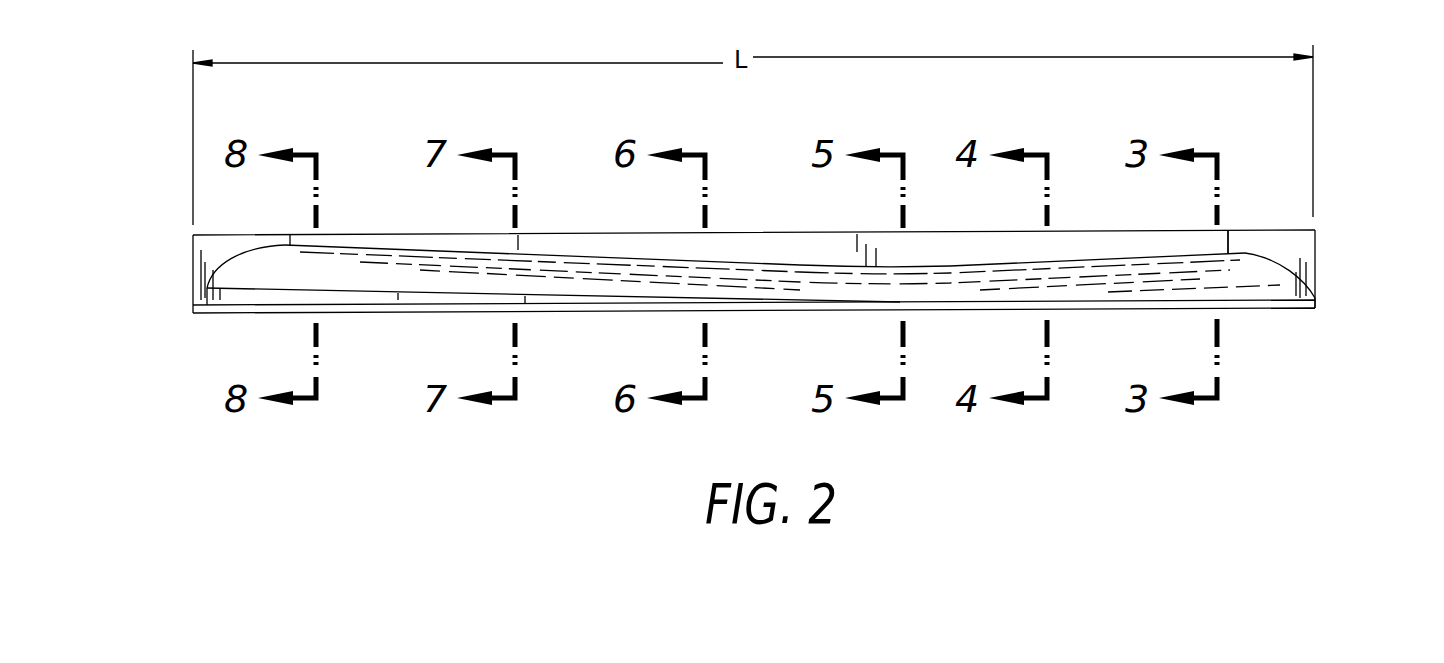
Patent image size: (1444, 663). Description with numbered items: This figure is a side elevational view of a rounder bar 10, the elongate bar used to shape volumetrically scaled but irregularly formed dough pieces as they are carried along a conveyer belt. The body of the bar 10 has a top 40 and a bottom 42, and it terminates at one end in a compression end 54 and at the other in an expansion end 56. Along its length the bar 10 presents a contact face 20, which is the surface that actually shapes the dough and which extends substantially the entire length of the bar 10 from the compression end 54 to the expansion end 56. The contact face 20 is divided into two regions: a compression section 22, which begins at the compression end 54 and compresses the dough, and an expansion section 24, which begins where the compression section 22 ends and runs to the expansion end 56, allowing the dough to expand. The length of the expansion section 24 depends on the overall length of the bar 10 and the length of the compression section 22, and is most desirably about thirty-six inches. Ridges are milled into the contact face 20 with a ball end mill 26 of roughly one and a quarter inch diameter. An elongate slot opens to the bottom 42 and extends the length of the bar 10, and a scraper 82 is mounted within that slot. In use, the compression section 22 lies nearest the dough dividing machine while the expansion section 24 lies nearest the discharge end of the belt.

The rounder bar 10 is at (1362, 154).
The contact face 20 is at (560, 263).
The compression section 22 is at (1108, 293).
The expansion section 24 is at (373, 285).
The ball end mill 26 is at (1033, 275).
The top 40 is at (1293, 230).
The bottom 42 is at (788, 302).
The compression end 54 is at (1312, 310).
The expansion end 56 is at (195, 315).
The scraper 82 is at (252, 313).